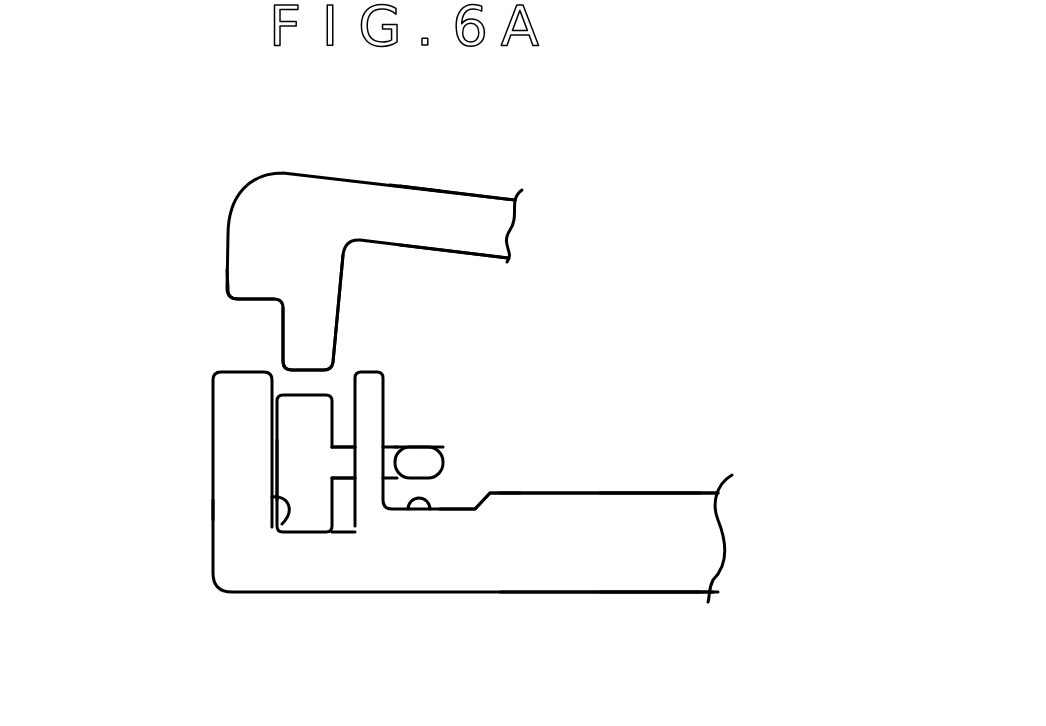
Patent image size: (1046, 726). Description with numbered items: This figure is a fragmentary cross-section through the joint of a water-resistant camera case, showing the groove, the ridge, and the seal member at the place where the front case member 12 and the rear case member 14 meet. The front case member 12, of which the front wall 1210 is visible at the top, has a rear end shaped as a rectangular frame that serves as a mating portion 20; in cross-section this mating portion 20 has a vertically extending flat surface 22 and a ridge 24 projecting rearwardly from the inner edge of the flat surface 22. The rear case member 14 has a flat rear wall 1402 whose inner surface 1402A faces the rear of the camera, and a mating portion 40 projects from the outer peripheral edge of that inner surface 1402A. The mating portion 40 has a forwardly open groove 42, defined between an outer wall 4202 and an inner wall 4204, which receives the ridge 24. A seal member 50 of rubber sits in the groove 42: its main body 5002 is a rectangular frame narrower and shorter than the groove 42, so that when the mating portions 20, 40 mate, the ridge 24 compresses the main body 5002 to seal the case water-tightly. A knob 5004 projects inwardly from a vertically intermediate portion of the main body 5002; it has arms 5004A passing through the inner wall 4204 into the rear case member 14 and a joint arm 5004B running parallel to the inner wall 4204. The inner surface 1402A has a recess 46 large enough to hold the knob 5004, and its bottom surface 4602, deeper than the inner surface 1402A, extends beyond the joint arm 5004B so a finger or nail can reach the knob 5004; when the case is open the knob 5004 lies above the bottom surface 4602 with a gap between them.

The front case member 12 is at (488, 193).
The front wall 1210 is at (433, 188).
The rear case member 14 is at (619, 556).
The rear wall 1402 is at (627, 592).
The inner surface 1402A is at (658, 492).
The mating portion 20 is at (227, 327).
The flat surface 22 is at (247, 302).
The ridge 24 is at (315, 340).
The mating portion 40 is at (405, 514).
The groove 42 is at (273, 528).
The outer wall 4202 is at (210, 435).
The inner wall 4204 is at (385, 398).
The recess 46 is at (468, 490).
The bottom surface 4602 is at (430, 509).
The seal member 50 is at (353, 540).
The main body 5002 is at (287, 465).
The knob 5004 is at (438, 455).
The arm 5004A is at (347, 467).
The joint arm 5004B is at (430, 467).